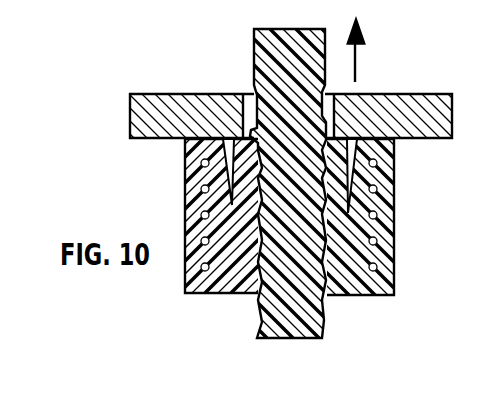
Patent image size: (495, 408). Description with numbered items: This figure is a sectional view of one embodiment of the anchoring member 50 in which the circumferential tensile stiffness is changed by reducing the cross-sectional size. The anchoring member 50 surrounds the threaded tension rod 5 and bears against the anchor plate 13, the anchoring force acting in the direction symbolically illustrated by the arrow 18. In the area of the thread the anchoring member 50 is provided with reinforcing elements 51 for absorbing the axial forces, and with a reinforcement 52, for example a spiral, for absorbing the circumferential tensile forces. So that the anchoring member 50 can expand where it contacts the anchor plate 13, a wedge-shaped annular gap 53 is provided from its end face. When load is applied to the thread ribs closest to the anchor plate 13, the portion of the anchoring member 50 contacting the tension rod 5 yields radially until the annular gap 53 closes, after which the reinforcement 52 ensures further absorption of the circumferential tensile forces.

The tension rod 5 is at (256, 321).
The anchor plate 13 is at (167, 106).
The arrow 18 is at (357, 60).
The anchoring member 50 is at (265, 218).
The reinforcing elements 51 is at (330, 288).
The reinforcement 52 is at (378, 164).
The wedge-shaped annular gap 53 is at (223, 145).